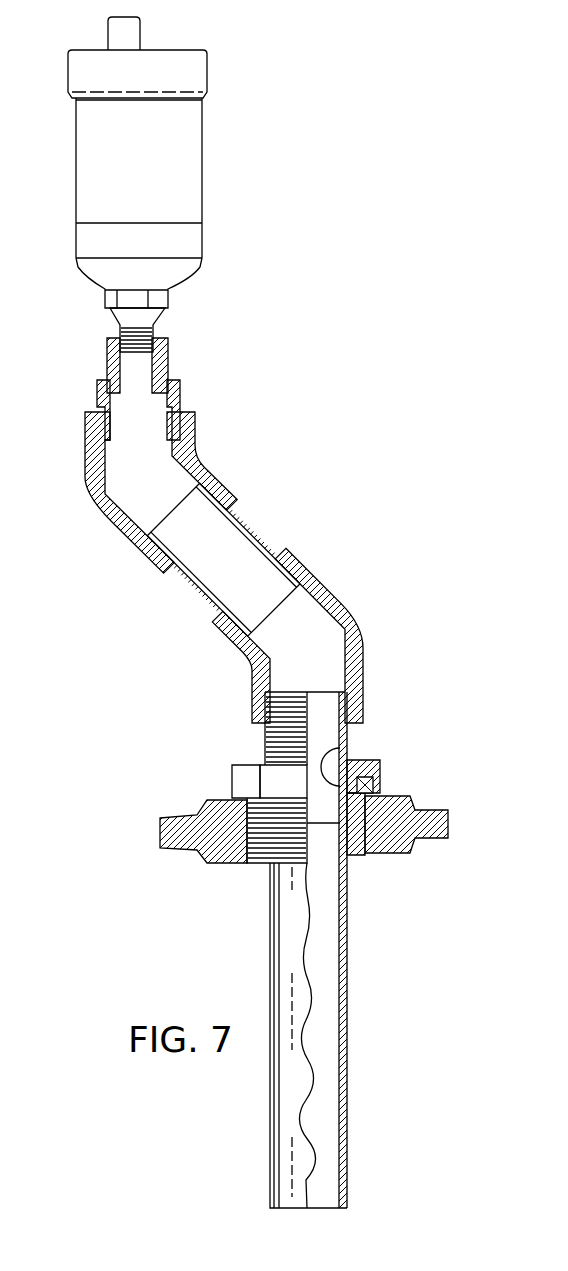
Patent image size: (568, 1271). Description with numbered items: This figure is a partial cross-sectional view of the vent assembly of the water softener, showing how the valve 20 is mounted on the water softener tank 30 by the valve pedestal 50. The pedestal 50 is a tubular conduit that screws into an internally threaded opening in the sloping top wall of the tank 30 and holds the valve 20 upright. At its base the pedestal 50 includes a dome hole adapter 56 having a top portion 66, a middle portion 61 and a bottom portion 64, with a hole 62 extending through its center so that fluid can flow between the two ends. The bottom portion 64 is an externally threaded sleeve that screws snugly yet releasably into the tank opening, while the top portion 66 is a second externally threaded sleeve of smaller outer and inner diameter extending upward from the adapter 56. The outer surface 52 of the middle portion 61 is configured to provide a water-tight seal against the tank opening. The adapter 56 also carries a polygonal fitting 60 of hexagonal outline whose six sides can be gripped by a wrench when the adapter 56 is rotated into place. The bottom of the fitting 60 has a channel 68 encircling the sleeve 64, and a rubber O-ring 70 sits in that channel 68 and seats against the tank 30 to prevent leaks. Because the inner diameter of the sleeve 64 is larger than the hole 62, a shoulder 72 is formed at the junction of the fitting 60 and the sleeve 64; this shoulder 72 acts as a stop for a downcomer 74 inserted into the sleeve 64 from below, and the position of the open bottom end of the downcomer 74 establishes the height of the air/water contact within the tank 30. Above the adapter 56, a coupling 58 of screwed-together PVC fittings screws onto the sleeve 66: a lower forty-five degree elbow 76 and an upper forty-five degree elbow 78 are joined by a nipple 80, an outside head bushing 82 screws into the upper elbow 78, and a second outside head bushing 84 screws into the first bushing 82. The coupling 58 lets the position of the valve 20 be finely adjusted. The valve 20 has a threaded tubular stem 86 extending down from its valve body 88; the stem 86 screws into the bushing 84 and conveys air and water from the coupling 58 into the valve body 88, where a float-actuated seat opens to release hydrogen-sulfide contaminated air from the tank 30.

The valve 20 is at (128, 162).
The valve body 88 is at (190, 148).
The threaded tubular stem 86 is at (170, 343).
The second outside head bushing 84 is at (170, 350).
The outside head bushing 82 is at (181, 400).
The upper 45 degree elbow 78 is at (196, 438).
The coupling 58 is at (214, 567).
The nipple 80 is at (253, 531).
The lower 45 degree elbow 76 is at (346, 605).
The valve pedestal 50 is at (229, 771).
The dome hole adapter 56 is at (210, 767).
The top portion 66 is at (266, 760).
The polygonal fitting 60 is at (233, 789).
The middle portion 61 is at (243, 789).
The water softener tank 30 is at (160, 835).
The bottom portion 64 is at (260, 851).
The outer surface 52 is at (268, 868).
The hole 62 is at (347, 748).
The channel 68 is at (381, 771).
The O-ring 70 is at (381, 783).
The shoulder 72 is at (366, 855).
The downcomer 74 is at (346, 967).